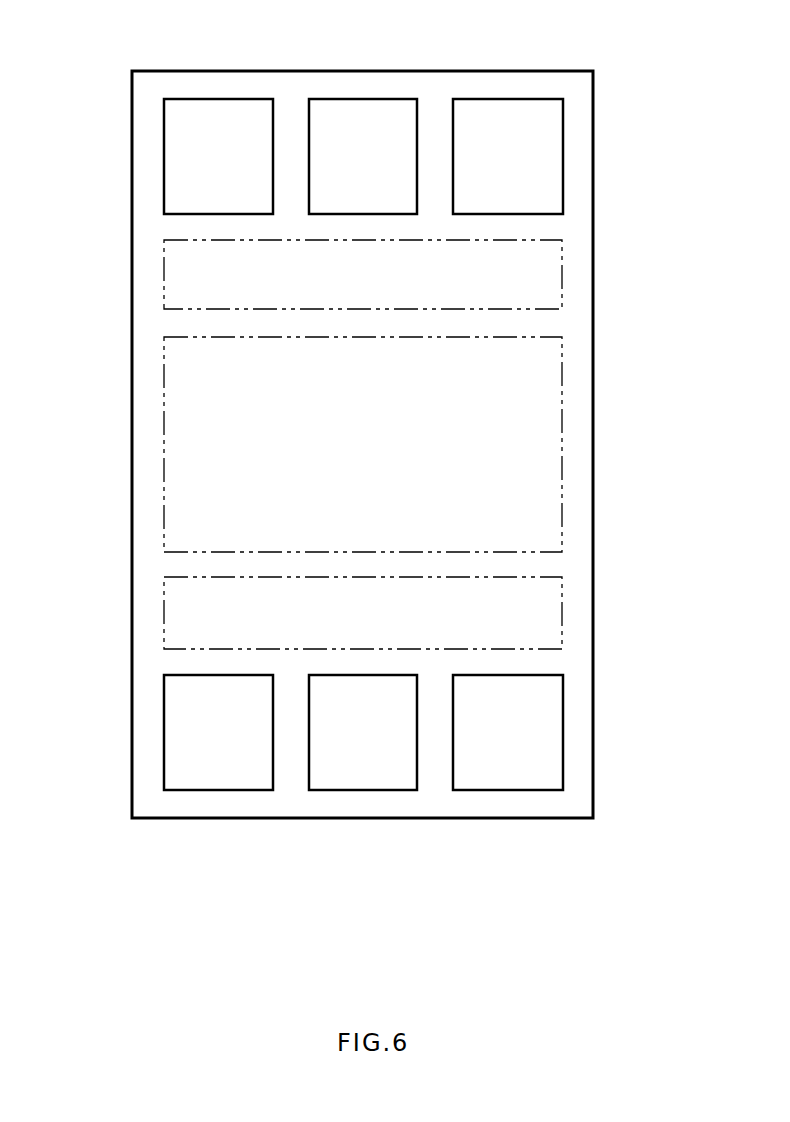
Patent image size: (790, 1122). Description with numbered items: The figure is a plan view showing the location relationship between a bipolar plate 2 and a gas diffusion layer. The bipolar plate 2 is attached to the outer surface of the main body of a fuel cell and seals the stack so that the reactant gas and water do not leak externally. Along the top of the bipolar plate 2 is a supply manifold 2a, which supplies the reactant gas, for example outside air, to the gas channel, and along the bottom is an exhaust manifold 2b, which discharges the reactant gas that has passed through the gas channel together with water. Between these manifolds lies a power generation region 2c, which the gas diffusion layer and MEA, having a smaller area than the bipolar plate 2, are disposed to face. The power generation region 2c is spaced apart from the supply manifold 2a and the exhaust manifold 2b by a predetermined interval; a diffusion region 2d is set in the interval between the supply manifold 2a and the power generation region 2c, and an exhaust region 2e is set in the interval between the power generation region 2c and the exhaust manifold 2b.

The bipolar plate 2 is at (132, 150).
The supply manifold 2a is at (217, 98).
The exhaust manifold 2b is at (505, 790).
The power generation region 2c is at (550, 446).
The diffusion region 2d is at (550, 277).
The exhaust region 2e is at (550, 621).